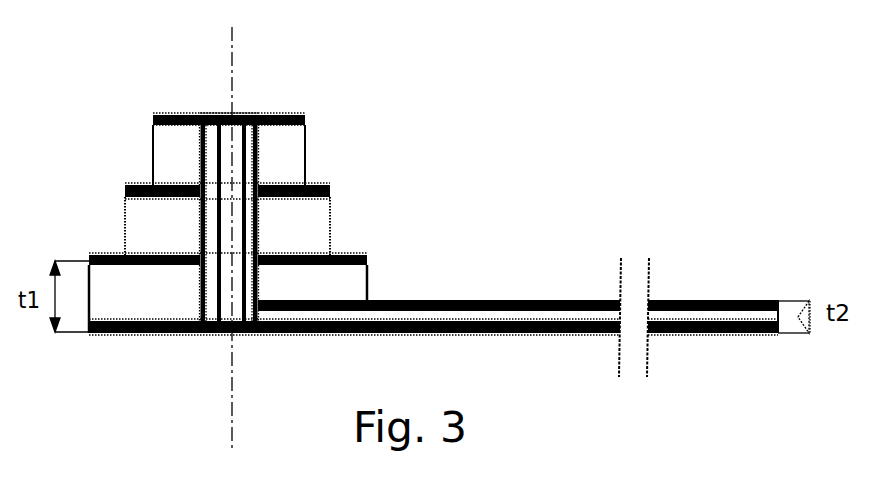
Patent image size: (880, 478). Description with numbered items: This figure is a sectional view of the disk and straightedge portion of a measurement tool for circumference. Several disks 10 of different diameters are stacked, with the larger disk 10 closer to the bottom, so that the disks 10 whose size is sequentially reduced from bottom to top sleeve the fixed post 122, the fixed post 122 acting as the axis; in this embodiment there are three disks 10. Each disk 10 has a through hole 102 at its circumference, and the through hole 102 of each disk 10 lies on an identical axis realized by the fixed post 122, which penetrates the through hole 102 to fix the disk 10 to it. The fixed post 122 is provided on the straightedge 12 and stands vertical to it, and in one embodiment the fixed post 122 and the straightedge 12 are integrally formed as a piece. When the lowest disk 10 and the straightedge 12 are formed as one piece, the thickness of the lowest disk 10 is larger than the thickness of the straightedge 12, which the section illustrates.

The disk 10 is at (182, 308).
The straightedge 12 is at (550, 317).
The through hole 102 is at (203, 115).
The fixed post 122 is at (233, 115).